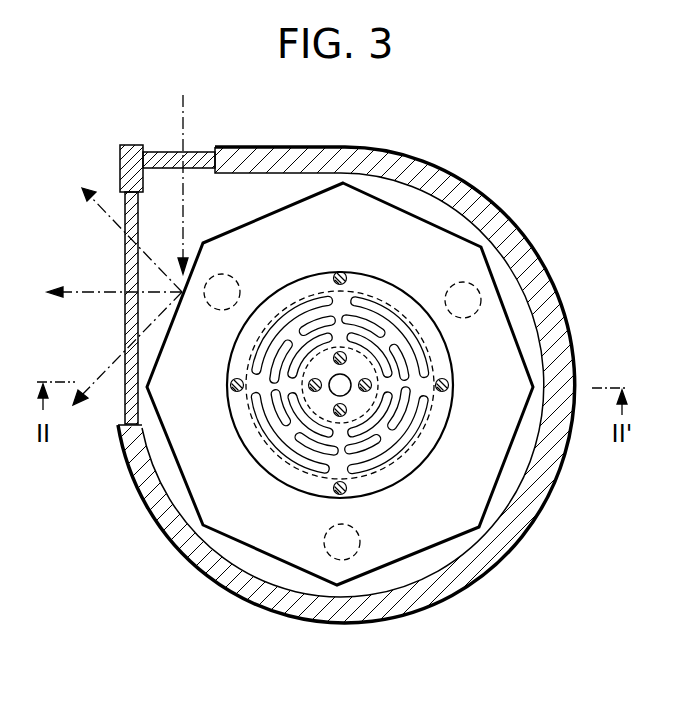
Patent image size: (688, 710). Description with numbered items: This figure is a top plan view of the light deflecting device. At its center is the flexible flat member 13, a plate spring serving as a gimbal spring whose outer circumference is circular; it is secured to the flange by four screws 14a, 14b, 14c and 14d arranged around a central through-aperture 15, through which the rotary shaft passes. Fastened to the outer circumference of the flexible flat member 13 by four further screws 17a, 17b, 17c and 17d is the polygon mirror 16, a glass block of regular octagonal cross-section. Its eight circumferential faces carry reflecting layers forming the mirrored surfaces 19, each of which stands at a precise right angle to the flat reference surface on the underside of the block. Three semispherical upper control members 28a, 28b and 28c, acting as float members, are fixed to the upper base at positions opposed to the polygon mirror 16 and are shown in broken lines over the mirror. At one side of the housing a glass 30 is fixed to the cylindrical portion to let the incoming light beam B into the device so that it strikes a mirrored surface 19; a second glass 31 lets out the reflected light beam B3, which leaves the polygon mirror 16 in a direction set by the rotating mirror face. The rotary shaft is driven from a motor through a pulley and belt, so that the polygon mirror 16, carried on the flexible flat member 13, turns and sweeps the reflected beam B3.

The flexible flat member 13 is at (385, 430).
The screw 14a is at (343, 352).
The screw 14b is at (371, 384).
The screw 14c is at (343, 416).
The screw 14d is at (317, 392).
The through-aperture 15 is at (349, 377).
The polygon mirror 16 is at (503, 432).
The screw 17a is at (340, 271).
The screw 17b is at (449, 385).
The screw 17c is at (334, 492).
The screw 17d is at (230, 385).
The mirrored surface 19 is at (310, 192).
The upper control member 28a is at (237, 280).
The upper control member 28b is at (450, 286).
The upper control member 28c is at (343, 560).
The glass 30 is at (197, 152).
The glass 31 is at (125, 205).
The light beam B is at (183, 200).
The light beam B3 is at (105, 210).